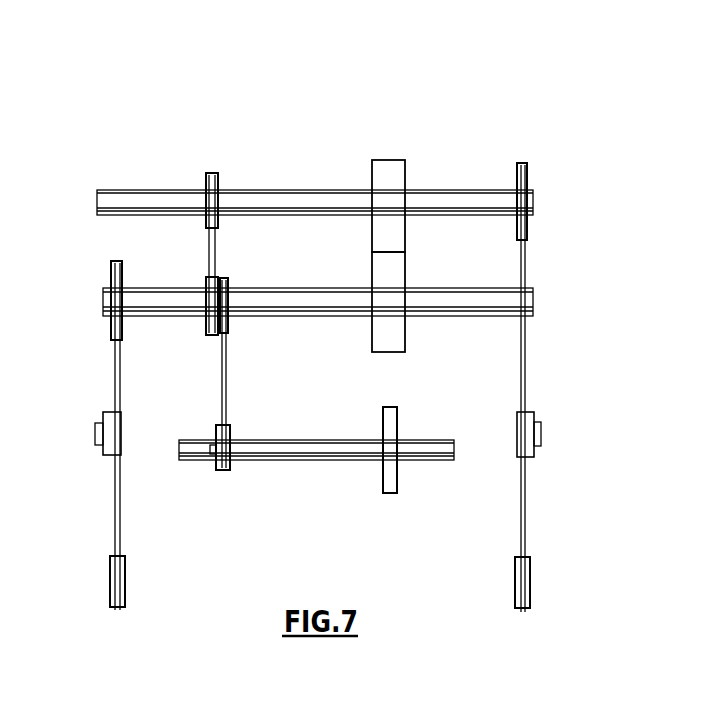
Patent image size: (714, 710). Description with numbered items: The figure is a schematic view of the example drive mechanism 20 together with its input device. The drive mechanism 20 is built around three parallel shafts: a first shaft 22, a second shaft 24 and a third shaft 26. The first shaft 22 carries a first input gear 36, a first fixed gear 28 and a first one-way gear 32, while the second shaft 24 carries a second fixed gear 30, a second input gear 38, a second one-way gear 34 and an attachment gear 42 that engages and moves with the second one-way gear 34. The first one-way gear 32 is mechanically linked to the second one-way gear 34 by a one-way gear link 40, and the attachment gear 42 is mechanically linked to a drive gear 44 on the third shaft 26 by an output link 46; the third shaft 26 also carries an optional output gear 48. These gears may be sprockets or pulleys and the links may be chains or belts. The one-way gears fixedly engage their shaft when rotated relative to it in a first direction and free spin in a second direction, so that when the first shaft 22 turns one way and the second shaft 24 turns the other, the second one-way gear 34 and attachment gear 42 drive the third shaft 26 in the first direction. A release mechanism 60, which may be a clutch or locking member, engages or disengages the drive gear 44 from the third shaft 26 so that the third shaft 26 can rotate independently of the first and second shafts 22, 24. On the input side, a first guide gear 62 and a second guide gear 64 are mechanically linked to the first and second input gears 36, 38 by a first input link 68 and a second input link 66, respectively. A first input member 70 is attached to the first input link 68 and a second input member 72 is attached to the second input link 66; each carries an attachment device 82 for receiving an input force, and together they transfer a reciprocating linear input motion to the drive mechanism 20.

The drive mechanism 20 is at (178, 145).
The first shaft 22 is at (427, 190).
The second shaft 24 is at (430, 316).
The third shaft 26 is at (286, 460).
The first fixed gear 28 is at (386, 160).
The second fixed gear 30 is at (391, 352).
The first one-way gear 32 is at (218, 176).
The second one-way gear 34 is at (206, 330).
The first input gear 36 is at (523, 166).
The second input gear 38 is at (111, 278).
The one-way gear link 40 is at (215, 258).
The attachment gear 42 is at (228, 330).
The drive gear 44 is at (226, 470).
The output link 46 is at (227, 380).
The output gear 48 is at (390, 493).
The release mechanism 60 is at (211, 450).
The first guide gear 62 is at (530, 575).
The second guide gear 64 is at (125, 571).
The second input link 66 is at (115, 518).
The first input link 68 is at (525, 495).
The first input member 70 is at (528, 412).
The second input member 72 is at (103, 455).
The attachment device 82 is at (541, 434).